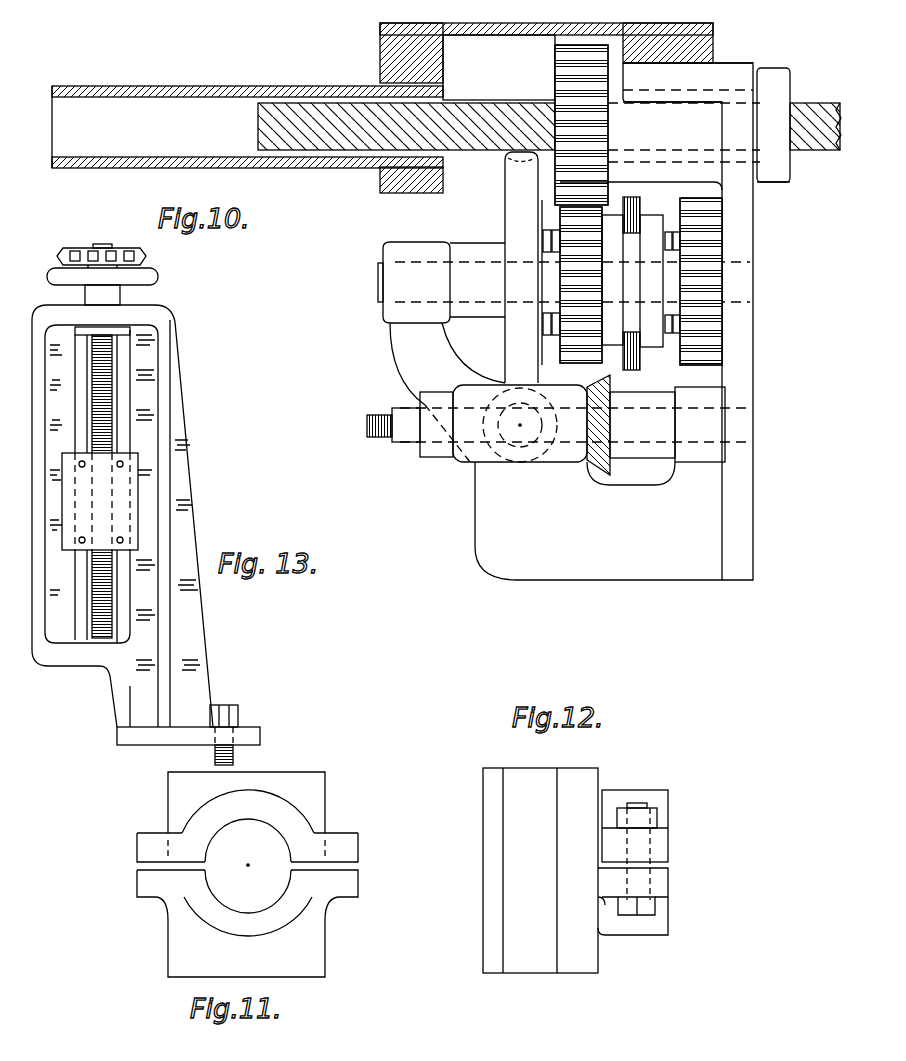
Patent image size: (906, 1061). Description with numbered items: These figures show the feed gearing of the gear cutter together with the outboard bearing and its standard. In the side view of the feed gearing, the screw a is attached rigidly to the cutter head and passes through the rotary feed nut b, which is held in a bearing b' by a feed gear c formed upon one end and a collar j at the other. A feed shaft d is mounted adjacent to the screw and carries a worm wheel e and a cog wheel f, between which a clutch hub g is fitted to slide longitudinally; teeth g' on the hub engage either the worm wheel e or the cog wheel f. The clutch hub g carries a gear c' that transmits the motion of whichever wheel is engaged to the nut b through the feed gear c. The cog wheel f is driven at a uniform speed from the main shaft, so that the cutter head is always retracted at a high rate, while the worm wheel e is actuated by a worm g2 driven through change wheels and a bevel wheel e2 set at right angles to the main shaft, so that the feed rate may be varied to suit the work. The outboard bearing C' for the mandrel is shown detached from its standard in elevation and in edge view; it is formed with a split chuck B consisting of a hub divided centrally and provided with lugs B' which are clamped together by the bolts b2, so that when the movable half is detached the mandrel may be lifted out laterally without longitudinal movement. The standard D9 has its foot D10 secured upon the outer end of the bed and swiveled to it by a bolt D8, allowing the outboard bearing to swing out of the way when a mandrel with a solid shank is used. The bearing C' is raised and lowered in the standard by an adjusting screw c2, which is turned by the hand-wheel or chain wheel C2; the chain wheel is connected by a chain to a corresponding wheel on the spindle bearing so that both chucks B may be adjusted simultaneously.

In FIG. 10, the bolt b2 is at (382, 108).
In FIG. 12, the bolt b2 is at (637, 803).
In FIG. 10, the feed gear c is at (566, 125).
In FIG. 10, the feed nut b is at (575, 321).
In FIG. 10, the bearing b' is at (688, 67).
In FIG. 10, the screw a is at (815, 103).
In FIG. 10, the collar j is at (780, 183).
In FIG. 10, the worm wheel e is at (505, 200).
In FIG. 10, the feed shaft d is at (378, 280).
In FIG. 10, the gear c' is at (581, 295).
In FIG. 10, the clutch hub g is at (643, 289).
In FIG. 10, the teeth g' is at (608, 264).
In FIG. 10, the cog wheel f is at (722, 352).
In FIG. 10, the worm g2 is at (527, 450).
In FIG. 10, the bevel gear e2 is at (606, 472).
In FIG. 13, the standard D9 is at (180, 427).
In FIG. 13, the hand-wheel C2 is at (73, 252).
In FIG. 13, the adjusting screw c2 is at (100, 575).
In FIG. 13, the outboard bearing C' is at (100, 501).
In FIG. 11, the outboard bearing C' is at (246, 874).
In FIG. 12, the outboard bearing C' is at (540, 870).
In FIG. 13, the foot D10 is at (261, 734).
In FIG. 13, the bolt D8 is at (234, 711).
In FIG. 11, the split chuck B is at (268, 887).
In FIG. 12, the split chuck B is at (633, 920).
In FIG. 12, the lugs B' is at (657, 826).